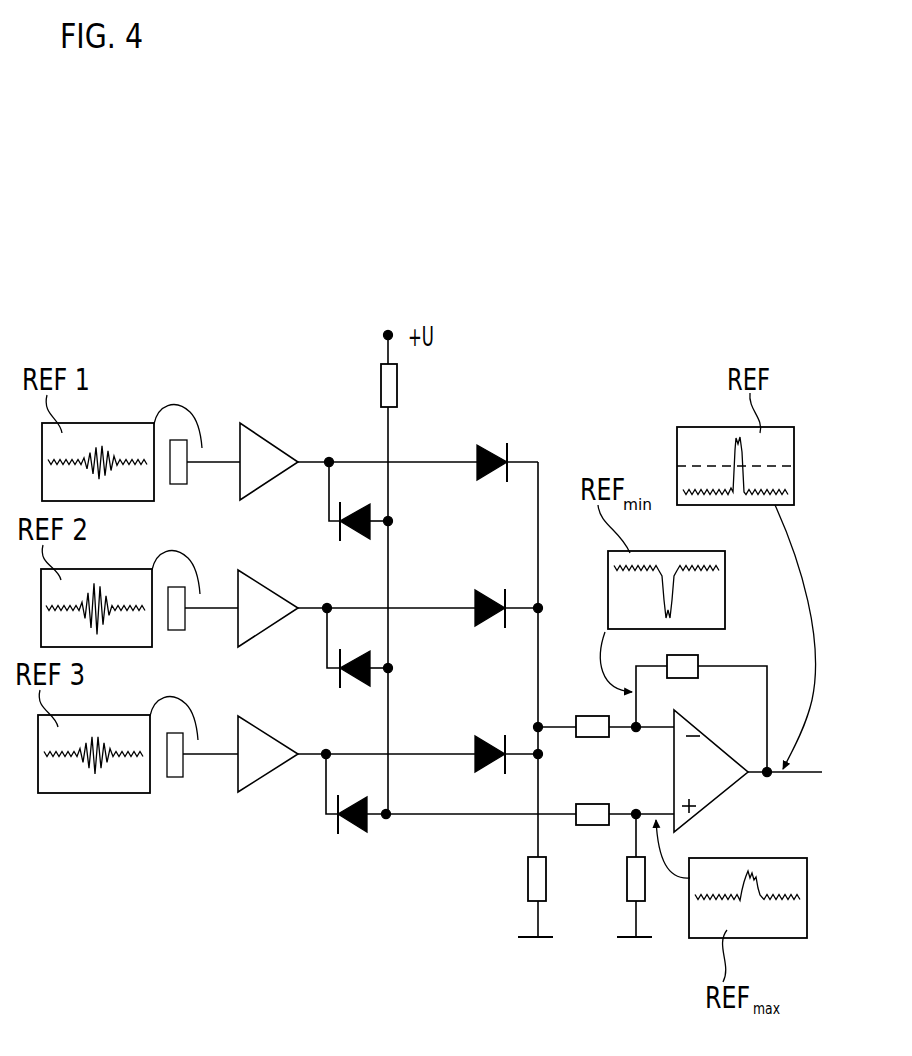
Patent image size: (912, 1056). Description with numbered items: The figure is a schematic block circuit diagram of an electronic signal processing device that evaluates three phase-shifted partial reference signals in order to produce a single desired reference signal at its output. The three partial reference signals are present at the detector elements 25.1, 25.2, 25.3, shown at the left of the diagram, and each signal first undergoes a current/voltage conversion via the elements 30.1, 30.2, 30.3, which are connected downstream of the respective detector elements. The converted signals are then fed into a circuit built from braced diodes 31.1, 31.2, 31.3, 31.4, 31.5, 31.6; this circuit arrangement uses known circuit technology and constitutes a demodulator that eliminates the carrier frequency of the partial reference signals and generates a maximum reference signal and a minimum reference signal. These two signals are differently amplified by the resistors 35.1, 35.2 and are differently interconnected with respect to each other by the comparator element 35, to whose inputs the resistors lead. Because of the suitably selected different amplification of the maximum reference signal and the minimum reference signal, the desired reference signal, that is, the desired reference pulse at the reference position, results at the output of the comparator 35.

The detector element 25.1 is at (182, 468).
The detector element 25.2 is at (182, 614).
The detector element 25.3 is at (182, 760).
The current/voltage conversion element 30.1 is at (267, 763).
The current/voltage conversion element 30.2 is at (270, 616).
The current/voltage conversion element 30.3 is at (270, 470).
The braced diode 31.1 is at (357, 540).
The braced diode 31.2 is at (478, 445).
The braced diode 31.3 is at (357, 688).
The braced diode 31.4 is at (478, 592).
The braced diode 31.5 is at (355, 832).
The braced diode 31.6 is at (478, 738).
The comparator element 35 is at (713, 782).
The resistor 35.1 is at (594, 725).
The resistor 35.2 is at (592, 820).